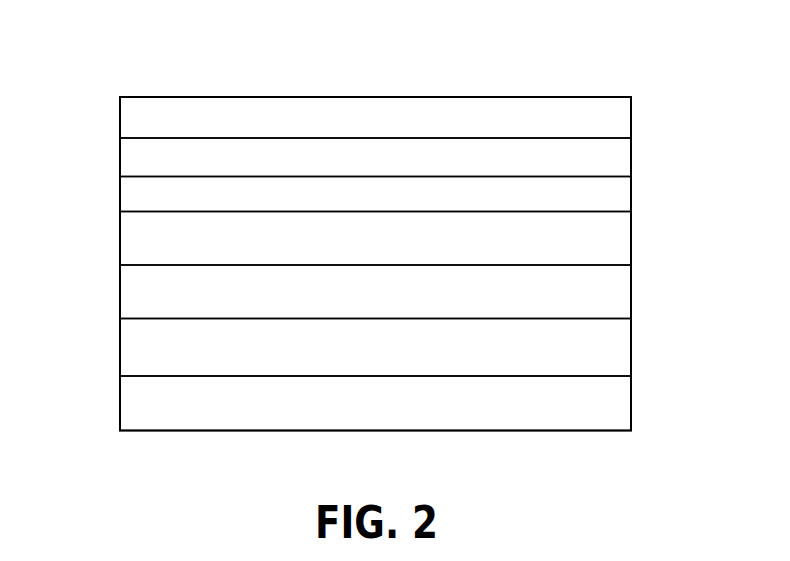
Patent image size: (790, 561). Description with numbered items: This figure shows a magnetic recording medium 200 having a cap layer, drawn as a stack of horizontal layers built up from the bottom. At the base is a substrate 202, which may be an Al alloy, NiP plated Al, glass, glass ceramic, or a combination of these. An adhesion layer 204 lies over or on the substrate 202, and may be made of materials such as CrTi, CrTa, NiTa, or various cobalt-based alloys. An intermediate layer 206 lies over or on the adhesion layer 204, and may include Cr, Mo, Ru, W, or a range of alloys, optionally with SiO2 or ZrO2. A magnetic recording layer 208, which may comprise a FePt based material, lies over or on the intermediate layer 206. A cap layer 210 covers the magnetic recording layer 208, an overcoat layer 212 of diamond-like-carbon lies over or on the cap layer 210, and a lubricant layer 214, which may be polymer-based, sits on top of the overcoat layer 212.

The medium 200 is at (128, 38).
The substrate 202 is at (631, 407).
The adhesion layer 204 is at (631, 353).
The intermediate layer 206 is at (631, 292).
The magnetic recording layer 208 is at (631, 238).
The cap layer 210 is at (631, 195).
The overcoat layer 212 is at (631, 156).
The lubricant layer 214 is at (631, 116).